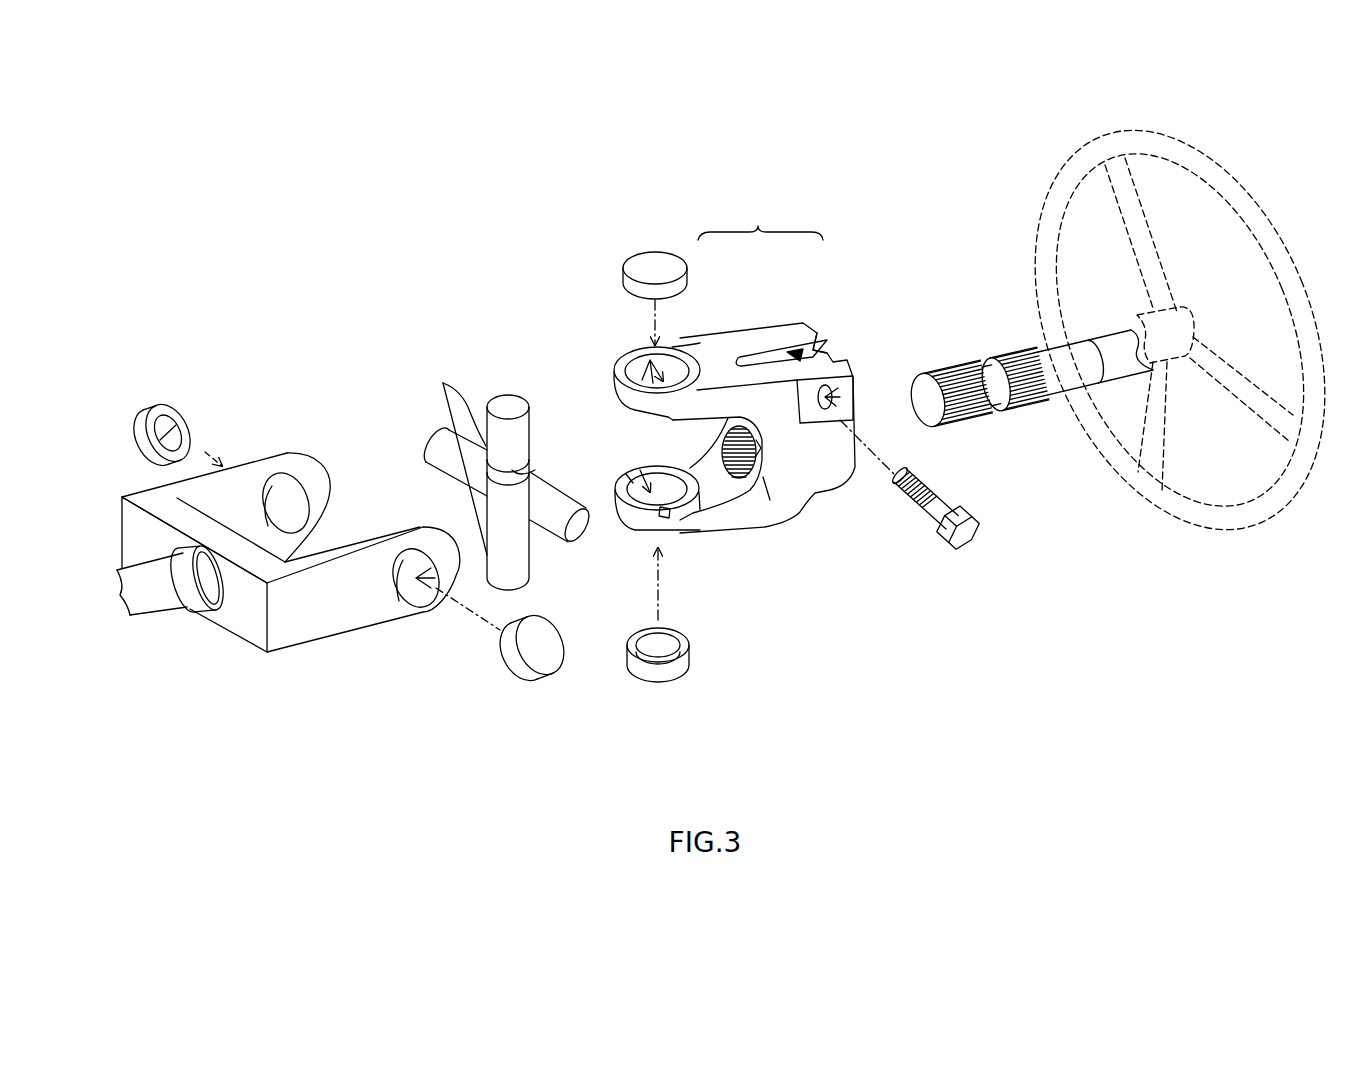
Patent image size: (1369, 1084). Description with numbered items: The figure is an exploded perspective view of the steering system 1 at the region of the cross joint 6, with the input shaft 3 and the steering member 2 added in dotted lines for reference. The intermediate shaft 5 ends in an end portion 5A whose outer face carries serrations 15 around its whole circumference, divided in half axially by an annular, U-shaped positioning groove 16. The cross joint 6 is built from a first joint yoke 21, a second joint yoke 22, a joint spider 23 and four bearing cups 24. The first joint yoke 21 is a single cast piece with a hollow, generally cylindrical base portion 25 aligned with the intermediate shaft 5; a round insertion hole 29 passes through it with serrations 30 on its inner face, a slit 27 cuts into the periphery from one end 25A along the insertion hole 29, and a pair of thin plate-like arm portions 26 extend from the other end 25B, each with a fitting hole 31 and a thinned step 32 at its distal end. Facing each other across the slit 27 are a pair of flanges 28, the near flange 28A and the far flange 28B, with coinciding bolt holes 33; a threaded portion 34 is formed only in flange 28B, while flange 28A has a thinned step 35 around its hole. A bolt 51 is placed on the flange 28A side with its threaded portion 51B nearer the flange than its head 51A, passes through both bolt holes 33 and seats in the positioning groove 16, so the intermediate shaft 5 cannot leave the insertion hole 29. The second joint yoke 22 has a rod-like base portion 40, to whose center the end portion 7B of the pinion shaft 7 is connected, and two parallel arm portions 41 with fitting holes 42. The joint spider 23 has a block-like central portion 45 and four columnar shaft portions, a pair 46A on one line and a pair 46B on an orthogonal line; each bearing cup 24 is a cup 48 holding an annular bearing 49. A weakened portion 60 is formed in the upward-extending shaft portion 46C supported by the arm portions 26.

The steering system 1 is at (545, 193).
The steering member 2 is at (1174, 342).
The input shaft 3 is at (1133, 462).
The intermediate shaft 5 is at (1029, 404).
The end portion 5A is at (977, 386).
The cross joint 6 is at (469, 443).
The pinion shaft 7 is at (173, 616).
The end portion 7B is at (182, 600).
The serrations 15 is at (998, 368).
The positioning groove 16 is at (1003, 392).
The first joint yoke 21 is at (958, 367).
The second joint yoke 22 is at (311, 555).
The joint spider 23 is at (545, 406).
The bearing cups 24 is at (438, 475).
The base portion 25 is at (792, 404).
The one end 25A is at (853, 411).
The other end 25B is at (778, 507).
The arm portions 26 is at (624, 461).
The slit 27 is at (823, 350).
The flanges 28 is at (805, 281).
The flange 28A is at (767, 367).
The flange 28B is at (752, 333).
The insertion hole 29 is at (724, 441).
The serrations 30 is at (733, 428).
The fitting holes 31 is at (645, 372).
The step 32 is at (650, 416).
The bolt holes 33 is at (864, 405).
The threaded portion 34 is at (790, 355).
The step 35 is at (834, 405).
The base portion 40 is at (250, 622).
The arm portions 41 is at (288, 455).
The fitting holes 42 is at (298, 503).
The central portion 45 is at (520, 490).
The shaft portions 46A is at (490, 430).
The shaft portions 46B is at (466, 513).
The shaft portion 46C is at (531, 425).
The cup 48 is at (446, 463).
The bearing 49 is at (186, 430).
The bolt 51 is at (940, 556).
The head 51A is at (958, 545).
The threaded portion 51B is at (919, 537).
The weakened portion 60 is at (530, 466).